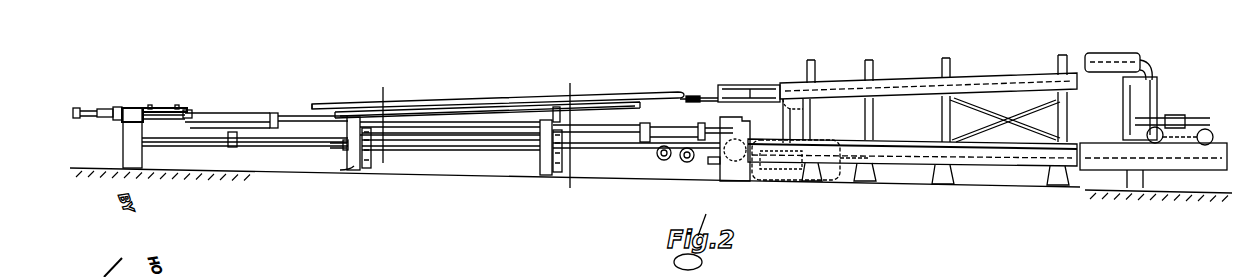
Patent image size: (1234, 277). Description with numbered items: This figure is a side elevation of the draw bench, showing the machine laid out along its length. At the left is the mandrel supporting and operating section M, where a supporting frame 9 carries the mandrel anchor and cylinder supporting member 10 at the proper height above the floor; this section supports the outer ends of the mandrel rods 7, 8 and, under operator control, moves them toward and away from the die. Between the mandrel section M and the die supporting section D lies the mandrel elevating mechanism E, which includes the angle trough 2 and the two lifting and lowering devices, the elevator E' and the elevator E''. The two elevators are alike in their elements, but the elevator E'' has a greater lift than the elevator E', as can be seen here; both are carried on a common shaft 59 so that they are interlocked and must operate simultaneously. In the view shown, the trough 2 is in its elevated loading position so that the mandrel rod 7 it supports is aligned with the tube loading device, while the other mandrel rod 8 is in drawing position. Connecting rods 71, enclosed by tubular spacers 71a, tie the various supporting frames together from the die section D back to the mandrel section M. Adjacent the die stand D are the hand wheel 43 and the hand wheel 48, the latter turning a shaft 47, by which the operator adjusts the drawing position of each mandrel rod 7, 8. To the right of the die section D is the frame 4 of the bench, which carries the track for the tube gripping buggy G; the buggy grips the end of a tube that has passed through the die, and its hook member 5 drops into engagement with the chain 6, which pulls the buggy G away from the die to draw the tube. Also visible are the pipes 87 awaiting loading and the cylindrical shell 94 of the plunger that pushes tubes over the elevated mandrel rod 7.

The mandrel supporting and operating section M is at (135, 108).
The supporting frame 9 is at (123, 151).
The connecting rods 71 is at (235, 115).
The pipes 87 is at (326, 104).
The angle trough 2 is at (521, 105).
The mandrel elevating mechanism E is at (487, 92).
The elevator E' is at (361, 153).
The elevator E'' is at (547, 151).
The shaft 59 is at (467, 142).
The shaft 47 is at (300, 147).
The mandrel anchor and cylinder supporting member 10 is at (384, 158).
The mandrel rod 8 is at (571, 185).
The tubular spacers 71a is at (612, 127).
The hand wheel 43 is at (659, 159).
The hand wheel 48 is at (688, 162).
The mandrel rod 7 is at (692, 96).
The cylindrical shell 94 is at (756, 85).
The die supporting section D is at (737, 179).
The frame 4 is at (1022, 153).
The tube gripping buggy G is at (1170, 145).
The chain 6 is at (1213, 165).
The hook member 5 is at (1218, 132).